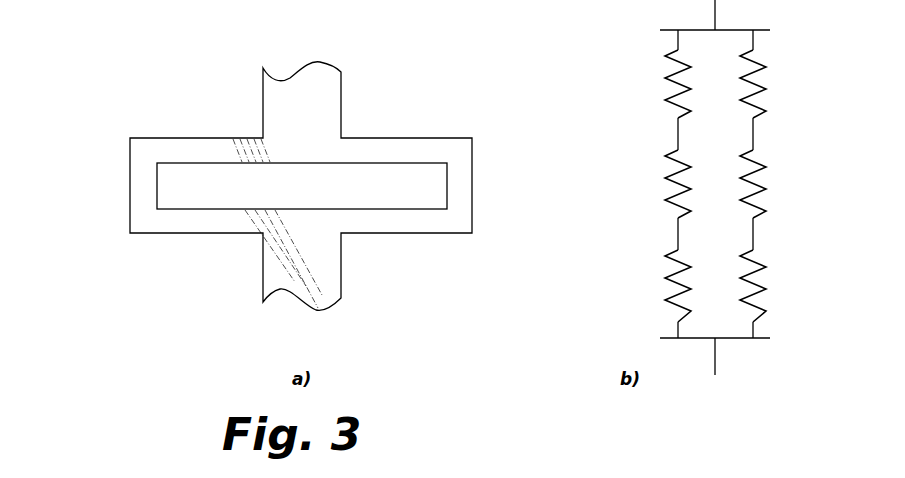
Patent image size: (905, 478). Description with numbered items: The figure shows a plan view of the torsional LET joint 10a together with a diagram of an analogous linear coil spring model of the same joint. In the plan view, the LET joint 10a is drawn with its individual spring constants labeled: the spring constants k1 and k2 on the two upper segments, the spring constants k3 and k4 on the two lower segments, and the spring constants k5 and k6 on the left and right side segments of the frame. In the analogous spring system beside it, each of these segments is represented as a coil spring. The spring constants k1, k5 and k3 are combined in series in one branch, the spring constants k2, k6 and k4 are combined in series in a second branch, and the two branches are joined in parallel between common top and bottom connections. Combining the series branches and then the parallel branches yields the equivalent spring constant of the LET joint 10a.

The LET joint 10a is at (110, 105).
The spring constant k1 is at (438, 92).
The spring constant k2 is at (594, 92).
The spring constant k3 is at (438, 284).
The spring constant k4 is at (593, 286).
The spring constant k5 is at (399, 184).
The spring constant k6 is at (643, 184).